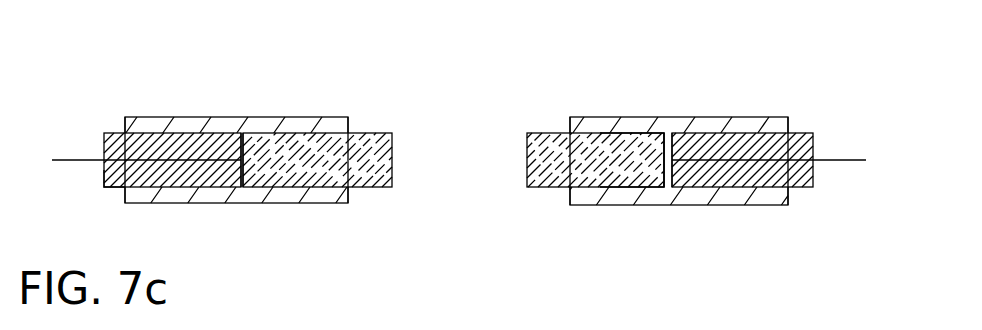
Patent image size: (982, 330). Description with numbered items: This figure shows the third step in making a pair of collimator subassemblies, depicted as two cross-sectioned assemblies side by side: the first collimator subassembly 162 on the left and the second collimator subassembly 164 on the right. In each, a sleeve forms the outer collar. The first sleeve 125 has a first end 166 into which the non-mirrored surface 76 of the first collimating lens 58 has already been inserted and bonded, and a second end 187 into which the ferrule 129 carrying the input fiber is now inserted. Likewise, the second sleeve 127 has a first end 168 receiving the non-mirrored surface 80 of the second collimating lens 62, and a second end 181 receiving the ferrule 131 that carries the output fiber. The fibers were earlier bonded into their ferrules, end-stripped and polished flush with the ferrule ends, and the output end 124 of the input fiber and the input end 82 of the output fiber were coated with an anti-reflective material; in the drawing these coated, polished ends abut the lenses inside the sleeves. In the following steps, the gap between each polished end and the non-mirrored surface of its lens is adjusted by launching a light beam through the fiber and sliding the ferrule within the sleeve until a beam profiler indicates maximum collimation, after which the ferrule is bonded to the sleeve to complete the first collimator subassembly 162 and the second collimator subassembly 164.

The first collimator subassembly 162 is at (292, 64).
The second collimator subassembly 164 is at (713, 66).
The output end 124 is at (241, 160).
The first sleeve 125 is at (207, 116).
The second sleeve 127 is at (693, 117).
The ferrule 129 is at (112, 187).
The ferrule 131 is at (806, 190).
The first end 166 is at (352, 121).
The first end 168 is at (790, 120).
The second end 181 is at (568, 124).
The second end 187 is at (124, 132).
The non-mirrored surface 76 is at (250, 151).
The first collimating lens 58 is at (340, 173).
The second collimating lens 62 is at (578, 171).
The non-mirrored surface 80 is at (664, 160).
The input end 82 is at (669, 175).